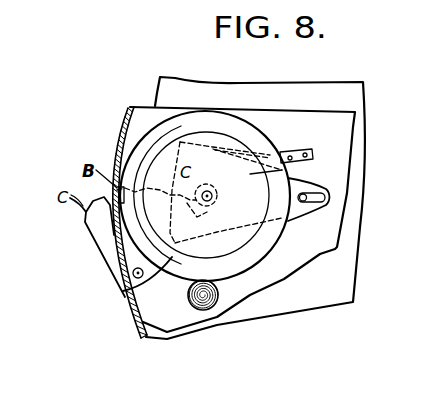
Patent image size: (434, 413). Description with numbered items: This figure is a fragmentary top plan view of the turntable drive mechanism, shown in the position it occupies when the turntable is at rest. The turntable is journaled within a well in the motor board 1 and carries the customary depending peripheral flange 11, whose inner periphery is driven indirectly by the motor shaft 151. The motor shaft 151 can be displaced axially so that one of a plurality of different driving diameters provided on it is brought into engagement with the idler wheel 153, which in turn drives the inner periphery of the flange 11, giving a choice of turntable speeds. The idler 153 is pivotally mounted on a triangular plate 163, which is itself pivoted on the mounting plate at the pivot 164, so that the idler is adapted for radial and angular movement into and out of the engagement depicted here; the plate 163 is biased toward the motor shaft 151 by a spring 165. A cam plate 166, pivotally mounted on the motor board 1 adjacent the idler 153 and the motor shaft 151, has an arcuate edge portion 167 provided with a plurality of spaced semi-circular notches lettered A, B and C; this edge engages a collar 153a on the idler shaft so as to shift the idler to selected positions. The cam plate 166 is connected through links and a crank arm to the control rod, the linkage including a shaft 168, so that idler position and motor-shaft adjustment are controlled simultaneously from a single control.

The motor board 1 is at (342, 78).
The depending peripheral flange 11 is at (131, 316).
The motor shaft 151 is at (205, 303).
The idler wheel 153 is at (142, 138).
The collar 153a is at (204, 184).
The triangular plate 163 is at (282, 170).
The pivot 164 is at (318, 213).
The spring 165 is at (283, 151).
The cam plate 166 is at (90, 230).
The arcuate edge portion 167 is at (207, 212).
The shaft 168 is at (133, 277).